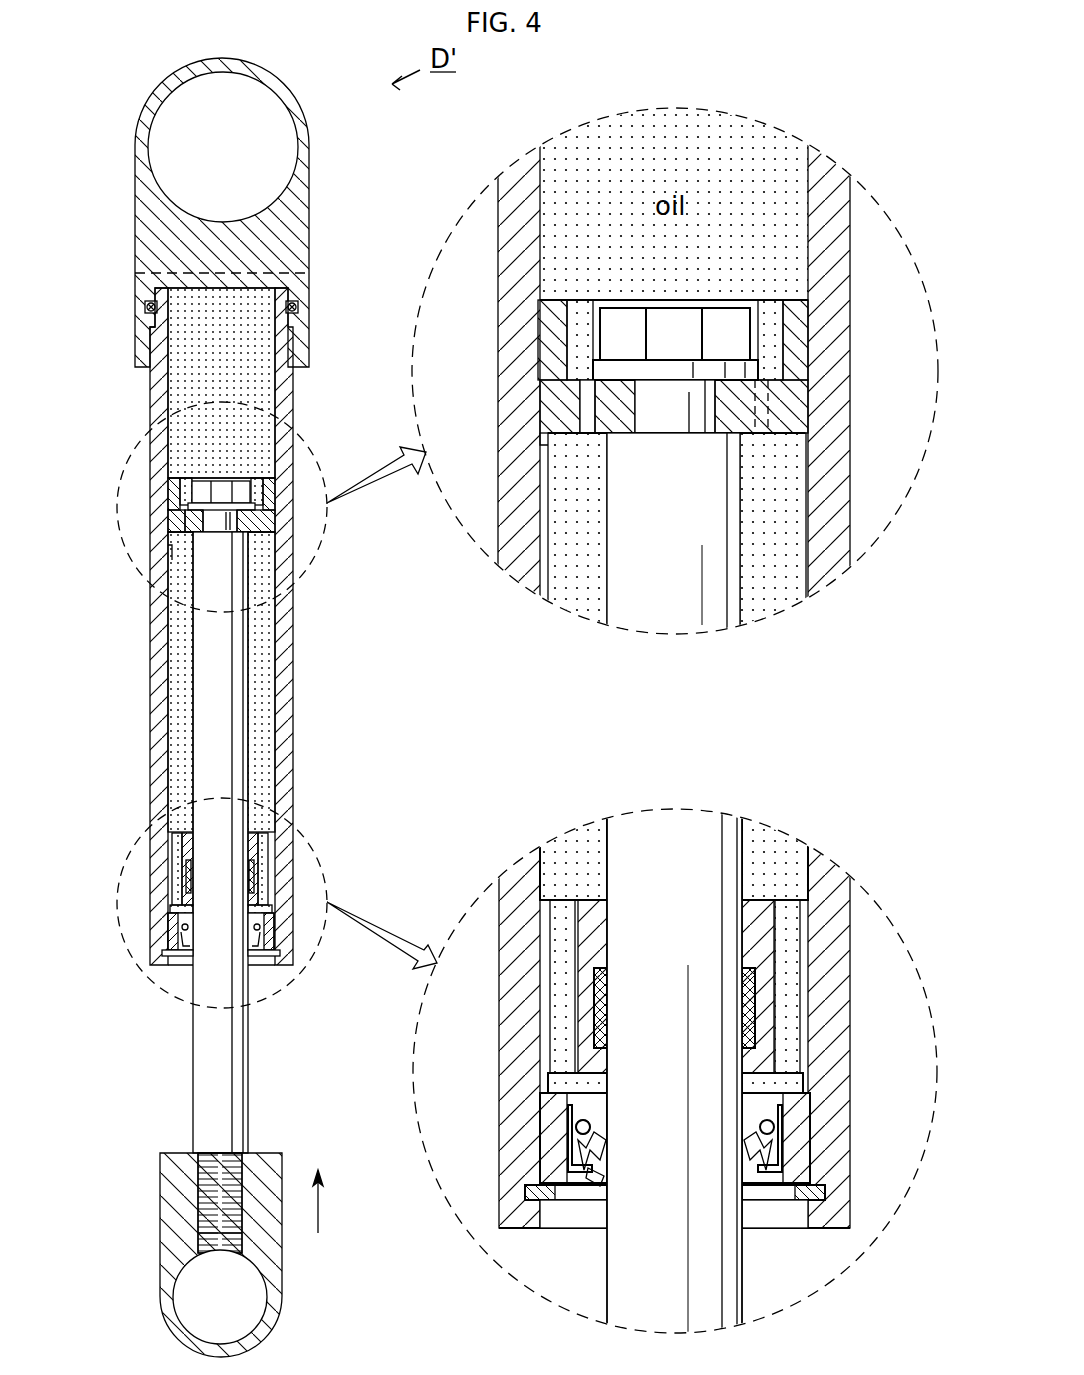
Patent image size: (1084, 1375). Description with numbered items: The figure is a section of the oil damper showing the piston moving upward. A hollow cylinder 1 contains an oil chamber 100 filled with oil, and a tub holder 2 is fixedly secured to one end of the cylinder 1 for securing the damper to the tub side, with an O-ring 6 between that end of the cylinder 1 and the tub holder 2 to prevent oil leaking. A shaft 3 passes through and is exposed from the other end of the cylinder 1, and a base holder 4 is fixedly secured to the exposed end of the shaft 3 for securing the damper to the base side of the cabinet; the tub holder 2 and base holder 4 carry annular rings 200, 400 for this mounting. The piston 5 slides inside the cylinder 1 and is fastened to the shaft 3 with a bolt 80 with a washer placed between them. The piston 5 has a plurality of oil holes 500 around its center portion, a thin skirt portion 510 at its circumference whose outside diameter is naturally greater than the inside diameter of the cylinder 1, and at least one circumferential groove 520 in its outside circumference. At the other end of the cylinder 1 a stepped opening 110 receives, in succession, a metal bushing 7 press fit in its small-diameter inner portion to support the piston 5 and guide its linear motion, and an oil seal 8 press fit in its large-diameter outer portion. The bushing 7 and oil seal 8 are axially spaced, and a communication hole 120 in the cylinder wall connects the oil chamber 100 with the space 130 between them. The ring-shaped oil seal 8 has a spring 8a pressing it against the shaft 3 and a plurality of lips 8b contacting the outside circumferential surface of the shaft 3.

The hollow cylinder 1 is at (150, 769).
The tub holder 2 is at (135, 212).
The shaft 3 is at (196, 1091).
The base holder 4 is at (166, 1206).
The piston 5 is at (800, 411).
The O-ring 6 is at (145, 307).
The bushing 7 is at (758, 1010).
The oil seal 8 is at (806, 1138).
The spring 8a is at (592, 1128).
The lips 8b is at (603, 1185).
The bolt 80 is at (805, 340).
The oil chamber 100 is at (265, 690).
The stepped opening 110 is at (805, 1232).
The communication hole 120 is at (556, 935).
The space 130 is at (790, 1082).
The annular ring 200 is at (160, 100).
The lower mounting hole 400 is at (276, 1314).
The oil holes 500 is at (585, 412).
The skirt portion 510 is at (545, 470).
The groove 520 is at (545, 378).